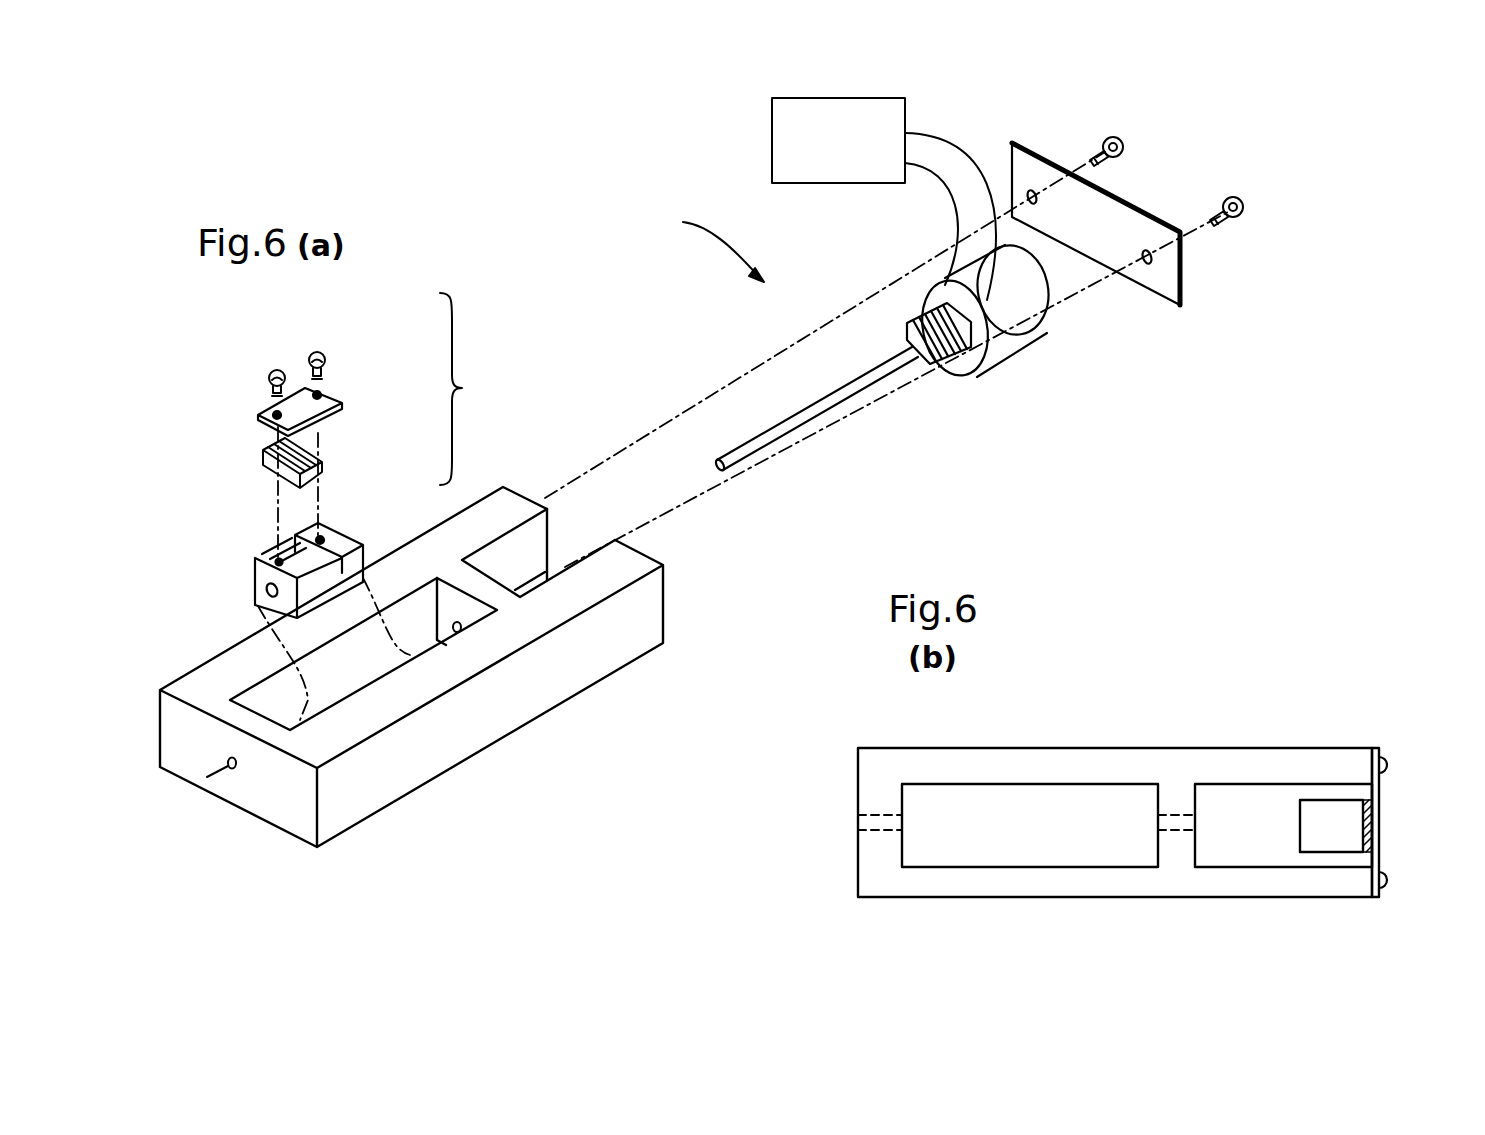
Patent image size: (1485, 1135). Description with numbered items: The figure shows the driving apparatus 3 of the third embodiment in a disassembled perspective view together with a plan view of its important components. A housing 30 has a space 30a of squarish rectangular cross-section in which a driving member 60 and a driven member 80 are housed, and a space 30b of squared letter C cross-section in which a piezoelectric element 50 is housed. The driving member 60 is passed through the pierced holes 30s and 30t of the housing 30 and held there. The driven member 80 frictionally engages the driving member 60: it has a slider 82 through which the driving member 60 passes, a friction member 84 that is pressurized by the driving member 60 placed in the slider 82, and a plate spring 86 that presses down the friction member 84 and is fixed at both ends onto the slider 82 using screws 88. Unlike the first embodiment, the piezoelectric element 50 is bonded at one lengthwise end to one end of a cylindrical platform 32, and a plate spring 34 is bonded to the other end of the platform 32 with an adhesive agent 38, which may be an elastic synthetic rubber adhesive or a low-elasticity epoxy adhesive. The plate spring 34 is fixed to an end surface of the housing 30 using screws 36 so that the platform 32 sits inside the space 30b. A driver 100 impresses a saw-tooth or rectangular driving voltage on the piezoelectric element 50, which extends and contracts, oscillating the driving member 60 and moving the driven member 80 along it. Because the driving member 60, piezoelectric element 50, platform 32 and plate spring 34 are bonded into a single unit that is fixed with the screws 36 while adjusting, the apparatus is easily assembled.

In FIG. 6A, the driving apparatus 3 is at (710, 241).
In FIG. 6A, the housing 30 is at (505, 713).
In FIG. 6B, the housing 30 is at (1143, 763).
In FIG. 6A, the space 30a is at (268, 690).
In FIG. 6B, the space 30a is at (1002, 805).
In FIG. 6A, the space 30b is at (515, 545).
In FIG. 6B, the space 30b is at (1267, 800).
In FIG. 6A, the pierced hole 30s is at (232, 770).
In FIG. 6B, the pierced hole 30s is at (880, 833).
In FIG. 6A, the pierced hole 30t is at (465, 624).
In FIG. 6B, the pierced hole 30t is at (1173, 833).
In FIG. 6A, the cylindrical platform 32 is at (1030, 337).
In FIG. 6B, the cylindrical platform 32 is at (1315, 840).
In FIG. 6A, the plate spring 34 is at (1187, 277).
In FIG. 6B, the plate spring 34 is at (1377, 797).
In FIG. 6A, the screws 36 is at (1130, 140).
In FIG. 6B, the screws 36 is at (1383, 763).
In FIG. 6B, the adhesive agent 38 is at (1370, 835).
In FIG. 6A, the piezoelectric element 50 is at (947, 373).
In FIG. 6A, the driving member 60 is at (803, 423).
In FIG. 6A, the driven member 80 is at (474, 389).
In FIG. 6A, the slider 82 is at (345, 533).
In FIG. 6A, the friction member 84 is at (321, 462).
In FIG. 6A, the plate spring 86 is at (316, 396).
In FIG. 6A, the screws 88 is at (323, 356).
In FIG. 6A, the driver 100 is at (772, 120).